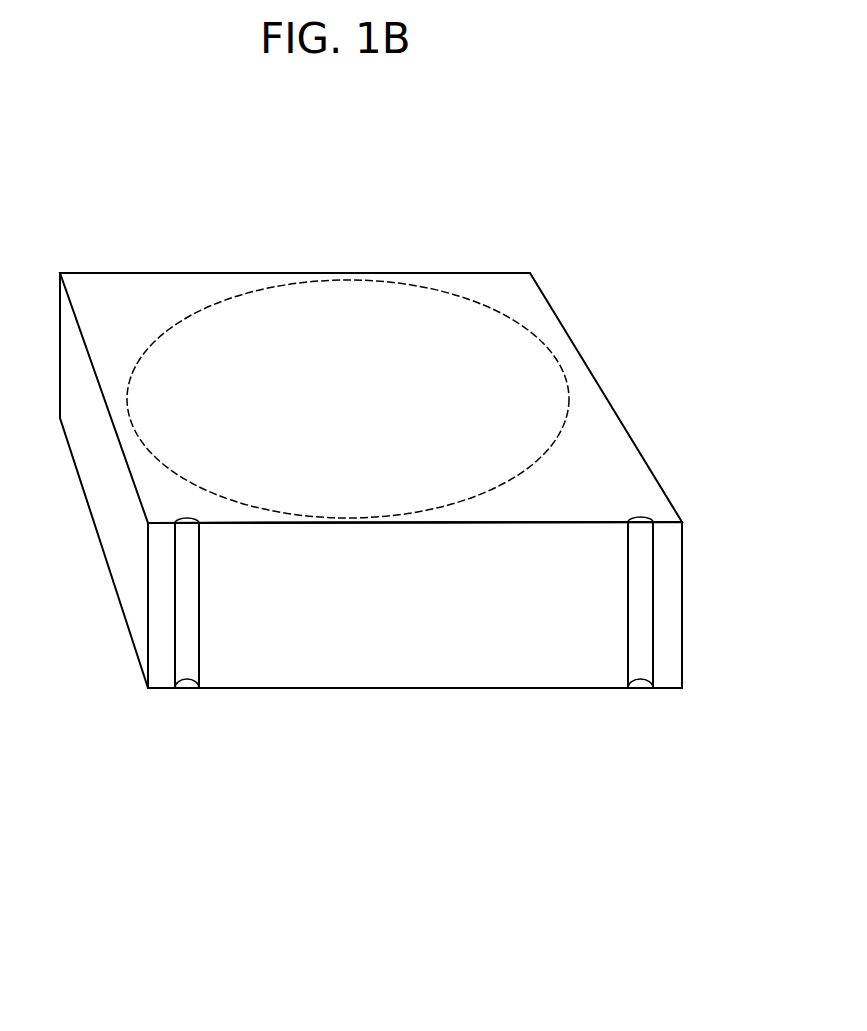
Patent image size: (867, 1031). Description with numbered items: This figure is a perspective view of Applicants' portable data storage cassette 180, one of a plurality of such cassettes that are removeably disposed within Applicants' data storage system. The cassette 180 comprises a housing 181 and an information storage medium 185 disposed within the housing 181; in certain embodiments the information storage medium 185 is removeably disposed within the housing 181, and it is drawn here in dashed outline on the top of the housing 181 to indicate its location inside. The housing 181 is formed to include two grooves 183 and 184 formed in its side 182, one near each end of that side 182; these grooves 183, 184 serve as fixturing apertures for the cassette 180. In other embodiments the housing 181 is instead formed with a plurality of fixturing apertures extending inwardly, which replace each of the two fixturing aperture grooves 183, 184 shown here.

The portable data storage cassette 180 is at (330, 740).
The housing 181 is at (488, 688).
The side 182 is at (432, 614).
The groove 183 is at (643, 532).
The groove 184 is at (187, 540).
The information storage medium 185 is at (370, 400).